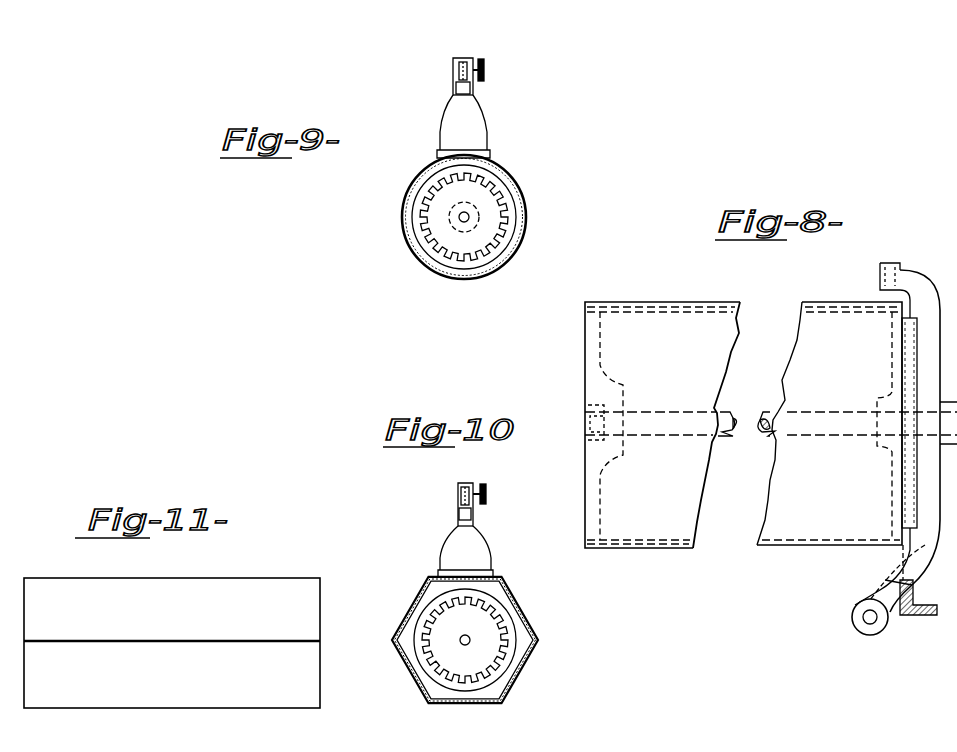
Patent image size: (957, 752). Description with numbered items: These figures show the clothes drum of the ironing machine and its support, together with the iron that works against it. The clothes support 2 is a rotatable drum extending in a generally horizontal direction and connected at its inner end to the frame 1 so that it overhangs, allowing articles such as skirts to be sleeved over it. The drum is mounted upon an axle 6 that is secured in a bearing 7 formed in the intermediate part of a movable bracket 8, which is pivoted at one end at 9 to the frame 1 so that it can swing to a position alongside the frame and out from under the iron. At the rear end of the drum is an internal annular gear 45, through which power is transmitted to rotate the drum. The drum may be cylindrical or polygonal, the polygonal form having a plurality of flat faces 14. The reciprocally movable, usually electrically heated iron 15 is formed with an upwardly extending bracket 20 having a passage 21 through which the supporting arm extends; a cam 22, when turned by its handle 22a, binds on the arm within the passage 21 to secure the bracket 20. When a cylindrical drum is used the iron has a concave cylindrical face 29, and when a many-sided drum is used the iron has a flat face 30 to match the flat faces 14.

In FIG. 8, the frame 1 is at (912, 613).
In FIG. 8, the clothes support 2 is at (780, 486).
In FIG. 8, the axle 6 is at (766, 430).
In FIG. 8, the bearing 7 is at (906, 440).
In FIG. 8, the movable bracket 8 is at (905, 560).
In FIG. 8, the pivot 9 is at (866, 618).
In FIG. 10, the flat faces 14 is at (538, 642).
In FIG. 11, the flat faces 14 is at (172, 643).
In FIG. 9, the iron 15 is at (452, 132).
In FIG. 9, the bracket 20 is at (456, 100).
In FIG. 10, the bracket 20 is at (462, 528).
In FIG. 9, the passage 21 is at (457, 88).
In FIG. 10, the passage 21 is at (459, 514).
In FIG. 9, the cam 22 is at (461, 72).
In FIG. 10, the cam 22 is at (462, 497).
In FIG. 9, the handle 22a is at (485, 66).
In FIG. 10, the handle 22a is at (487, 491).
In FIG. 9, the concave cylindrical face 29 is at (456, 157).
In FIG. 10, the flat face 30 is at (437, 583).
In FIG. 9, the internal annular gear 45 is at (426, 219).
In FIG. 10, the internal annular gear 45 is at (504, 653).
In FIG. 8, the internal annular gear 45 is at (908, 480).